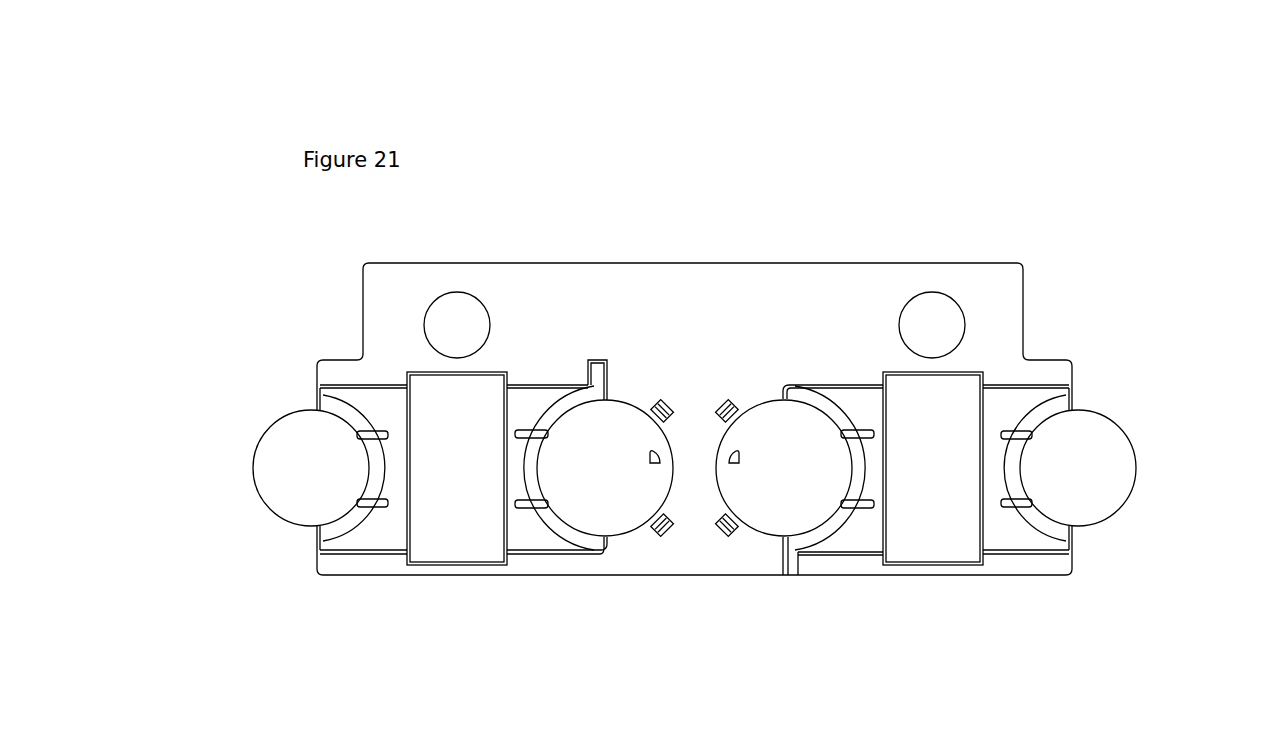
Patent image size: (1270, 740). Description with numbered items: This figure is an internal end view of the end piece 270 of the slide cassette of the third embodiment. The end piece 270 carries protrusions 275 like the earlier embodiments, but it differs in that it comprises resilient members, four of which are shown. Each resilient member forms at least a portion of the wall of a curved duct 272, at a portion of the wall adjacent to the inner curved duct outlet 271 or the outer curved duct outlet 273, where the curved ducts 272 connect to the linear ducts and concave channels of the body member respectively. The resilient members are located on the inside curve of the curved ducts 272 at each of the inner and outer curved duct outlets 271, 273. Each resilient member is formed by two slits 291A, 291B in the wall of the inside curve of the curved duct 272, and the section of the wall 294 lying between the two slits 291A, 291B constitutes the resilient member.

The end piece 270 is at (729, 302).
The inner curved duct outlet 271 is at (772, 515).
The curved duct 272 is at (1058, 458).
The outer curved duct outlet 273 is at (288, 502).
The protrusion 275 is at (732, 403).
The slit 291A is at (866, 425).
The slit 291B is at (867, 508).
The section of the wall 294 is at (333, 403).